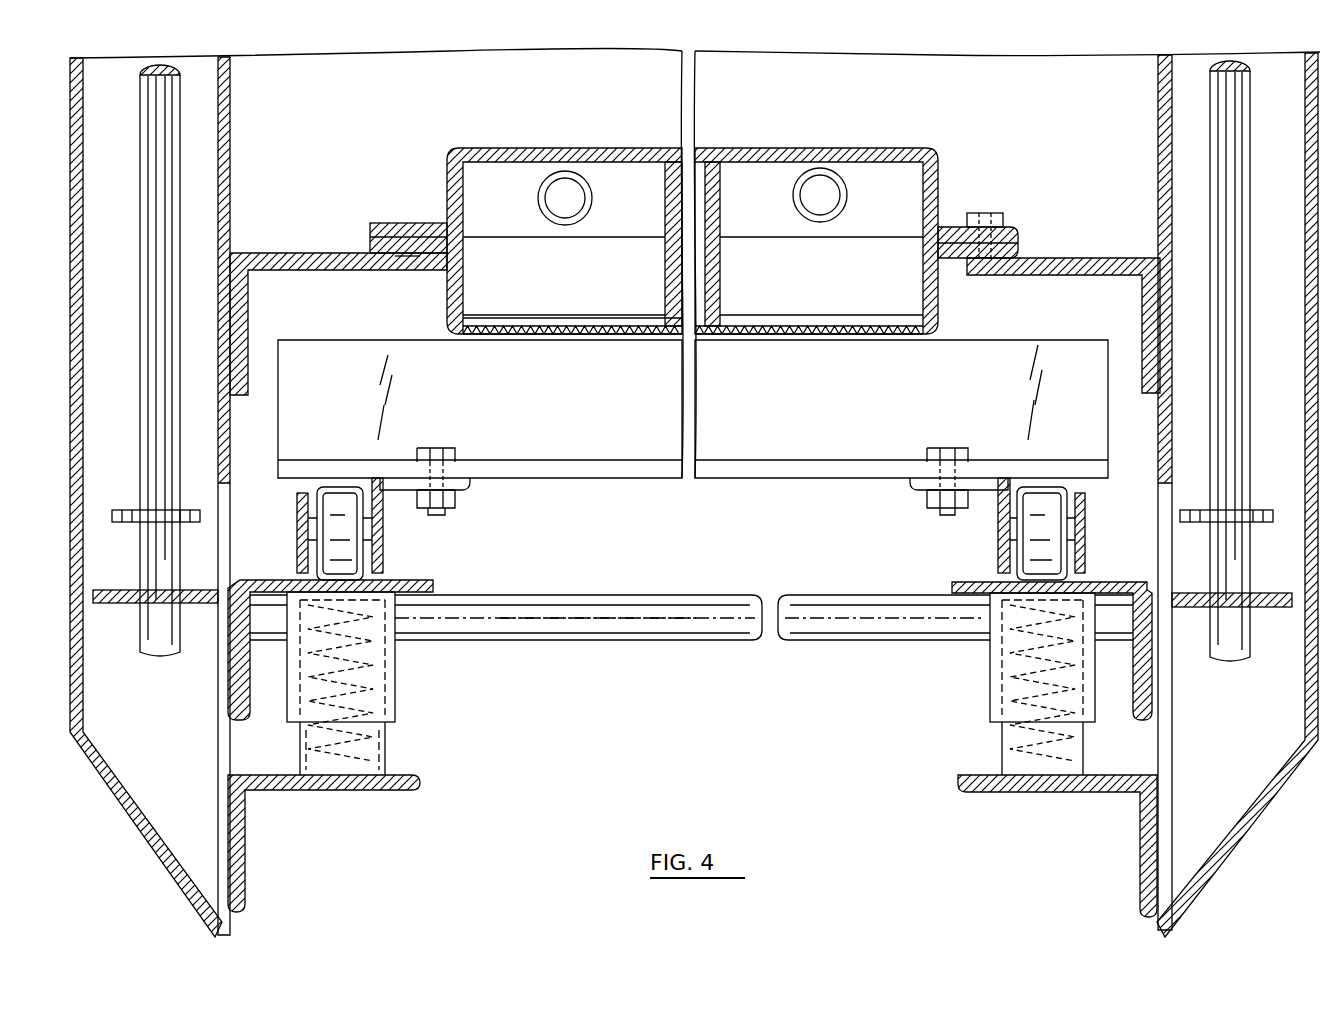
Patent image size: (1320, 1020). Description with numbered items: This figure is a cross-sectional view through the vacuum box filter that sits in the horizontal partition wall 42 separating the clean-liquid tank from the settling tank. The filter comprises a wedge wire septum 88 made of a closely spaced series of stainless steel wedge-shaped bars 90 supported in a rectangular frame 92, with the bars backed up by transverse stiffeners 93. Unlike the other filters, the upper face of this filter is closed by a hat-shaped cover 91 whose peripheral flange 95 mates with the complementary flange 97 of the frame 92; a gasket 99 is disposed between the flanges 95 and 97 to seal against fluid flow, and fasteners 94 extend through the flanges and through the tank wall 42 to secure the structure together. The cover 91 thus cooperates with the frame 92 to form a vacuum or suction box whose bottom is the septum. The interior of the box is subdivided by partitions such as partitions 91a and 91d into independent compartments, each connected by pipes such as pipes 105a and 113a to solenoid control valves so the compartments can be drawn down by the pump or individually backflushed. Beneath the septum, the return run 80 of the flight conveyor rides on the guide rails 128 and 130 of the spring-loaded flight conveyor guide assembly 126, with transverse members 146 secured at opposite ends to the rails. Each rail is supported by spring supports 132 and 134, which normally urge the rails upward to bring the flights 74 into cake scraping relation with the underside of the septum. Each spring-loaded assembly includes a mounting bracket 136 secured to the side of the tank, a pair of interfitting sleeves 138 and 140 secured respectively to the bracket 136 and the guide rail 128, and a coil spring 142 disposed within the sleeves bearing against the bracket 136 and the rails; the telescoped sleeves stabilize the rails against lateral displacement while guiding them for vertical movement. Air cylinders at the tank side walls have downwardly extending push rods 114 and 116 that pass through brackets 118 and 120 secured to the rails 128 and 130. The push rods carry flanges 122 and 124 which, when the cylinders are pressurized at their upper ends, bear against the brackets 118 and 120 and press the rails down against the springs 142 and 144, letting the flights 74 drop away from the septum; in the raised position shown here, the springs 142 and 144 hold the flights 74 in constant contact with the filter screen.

The horizontal partition wall 42 is at (305, 258).
The flights 74 is at (805, 414).
The return run 80 is at (395, 545).
The wedge wire septum 88 is at (550, 340).
The wedge-shaped bars 90 is at (592, 326).
The hat-shaped cover 91 is at (590, 150).
The partition 91a is at (672, 198).
The partition 91d is at (722, 240).
The rectangular frame 92 is at (462, 293).
The transverse stiffeners 93 is at (628, 322).
The fasteners 94 is at (993, 214).
The peripheral flange 95 is at (398, 235).
The flange 97 is at (410, 258).
The gasket 99 is at (1020, 240).
The pipe 105a is at (552, 200).
The pipe 113a is at (848, 195).
The push rod 114 is at (150, 258).
The push rod 116 is at (1240, 408).
The bracket 118 is at (117, 605).
The bracket 120 is at (1280, 608).
The flange 122 is at (130, 508).
The flange 124 is at (1255, 523).
The flight conveyor guide assembly 126 is at (735, 642).
The guide rail 128 is at (430, 585).
The guide rail 130 is at (955, 582).
The spring support 132 is at (398, 703).
The spring support 134 is at (988, 686).
The mounting bracket 136 is at (405, 792).
The sleeve 138 is at (388, 745).
The sleeve 140 is at (398, 668).
The coil spring 142 is at (338, 790).
The spring 144 is at (1045, 778).
The transverse members 146 is at (712, 600).